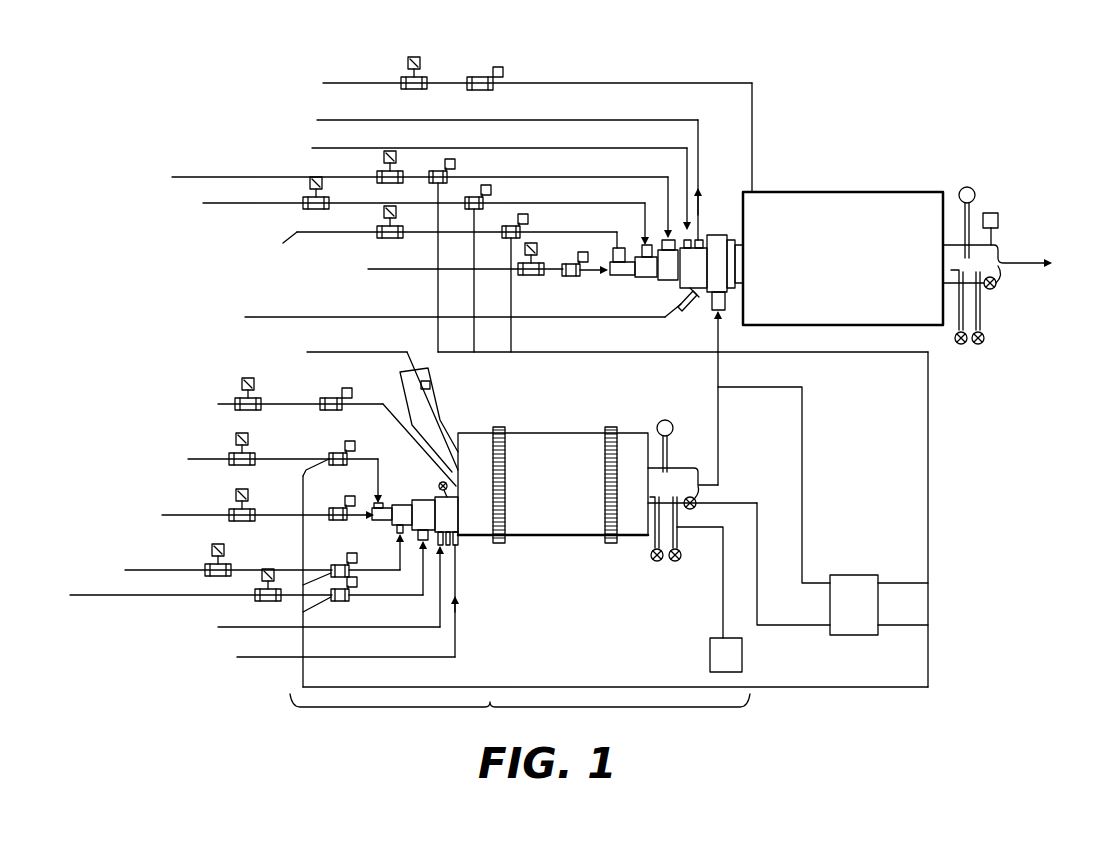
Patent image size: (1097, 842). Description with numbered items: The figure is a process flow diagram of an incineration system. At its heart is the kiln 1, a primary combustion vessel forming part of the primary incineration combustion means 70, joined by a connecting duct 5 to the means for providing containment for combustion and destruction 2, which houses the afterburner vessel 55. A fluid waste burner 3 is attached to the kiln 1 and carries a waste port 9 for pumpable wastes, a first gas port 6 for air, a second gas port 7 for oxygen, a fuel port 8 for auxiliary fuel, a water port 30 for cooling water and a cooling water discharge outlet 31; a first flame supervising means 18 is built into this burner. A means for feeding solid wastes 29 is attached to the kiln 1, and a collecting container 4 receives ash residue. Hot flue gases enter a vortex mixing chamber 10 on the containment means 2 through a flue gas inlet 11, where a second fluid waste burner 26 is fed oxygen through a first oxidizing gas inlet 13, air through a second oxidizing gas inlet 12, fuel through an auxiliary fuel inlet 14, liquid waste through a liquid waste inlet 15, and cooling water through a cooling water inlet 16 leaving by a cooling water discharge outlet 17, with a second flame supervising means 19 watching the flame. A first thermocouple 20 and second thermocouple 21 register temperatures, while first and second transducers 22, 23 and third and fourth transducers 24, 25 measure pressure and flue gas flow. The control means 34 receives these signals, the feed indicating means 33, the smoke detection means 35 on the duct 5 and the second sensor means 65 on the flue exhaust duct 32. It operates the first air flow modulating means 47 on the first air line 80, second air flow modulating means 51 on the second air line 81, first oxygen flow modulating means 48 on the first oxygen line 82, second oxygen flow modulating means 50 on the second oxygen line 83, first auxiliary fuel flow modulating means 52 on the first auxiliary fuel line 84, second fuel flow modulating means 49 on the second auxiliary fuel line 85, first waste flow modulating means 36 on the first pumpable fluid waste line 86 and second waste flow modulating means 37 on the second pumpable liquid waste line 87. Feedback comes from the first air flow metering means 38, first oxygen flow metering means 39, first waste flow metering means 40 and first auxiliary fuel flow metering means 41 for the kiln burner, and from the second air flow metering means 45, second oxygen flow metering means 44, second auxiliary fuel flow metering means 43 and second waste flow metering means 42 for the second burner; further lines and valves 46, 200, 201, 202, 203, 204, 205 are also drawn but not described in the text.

The kiln 1 is at (566, 440).
The means for providing containment for combustion and destruction 2 is at (868, 193).
The fluid waste burner 3 is at (420, 502).
The collecting container 4 is at (742, 662).
The connecting duct 5 is at (686, 470).
The first gas port 6 is at (420, 560).
The second gas port 7 is at (396, 530).
The fuel port 8 is at (380, 501).
The waste port 9 is at (372, 520).
The vortex mixing chamber 10 is at (714, 236).
The flue gas inlet 11 is at (710, 315).
The second oxidizing gas inlet 12 is at (664, 238).
The first oxidizing gas inlet 13 is at (642, 244).
The auxiliary fuel inlet 14 is at (612, 255).
The liquid waste inlet 15 is at (614, 275).
The cooling water inlet 16 is at (686, 236).
The cooling water discharge outlet 17 is at (700, 235).
The first flame supervising means 18 is at (439, 483).
The second flame supervising means 19 is at (694, 305).
The first thermocouple 20 is at (672, 444).
The second thermocouple 21 is at (968, 186).
The first transducer 22 is at (679, 562).
The second transducer 23 is at (654, 562).
The third transducer 24 is at (983, 345).
The fourth transducer 25 is at (958, 345).
The fluid waste burner 26 is at (694, 273).
The means for feeding solid wastes 29 is at (432, 410).
The water port 30 is at (446, 570).
The cooling water discharge outlet 31 is at (458, 544).
The flue exhaust duct 32 is at (1058, 252).
The feed indicating means 33 is at (430, 383).
The control means 34 is at (855, 575).
The smoke detection means 35 is at (996, 288).
The first waste flow modulating means 36 is at (338, 507).
The second waste flow modulating means 37 is at (572, 276).
The first air flow metering means 38 is at (260, 600).
The first oxygen flow metering means 39 is at (206, 576).
The first waste flow metering means 40 is at (232, 520).
The first auxiliary fuel flow metering means 41 is at (232, 465).
The second waste flow metering means 42 is at (520, 275).
The second auxiliary fuel flow metering means 43 is at (377, 236).
The second oxygen flow metering means 44 is at (328, 208).
The second air flow metering means 45 is at (377, 176).
The supply line 46 is at (462, 121).
The first air flow modulating means 47 is at (345, 601).
The first oxygen flow modulating means 48 is at (339, 564).
The second fuel flow modulating means 49 is at (509, 228).
The second oxygen flow modulating means 50 is at (472, 202).
The second air flow modulating means 51 is at (436, 176).
The first auxiliary fuel flow modulating means 52 is at (345, 452).
The afterburner vessel 55 is at (915, 320).
The second sensor means 65 is at (995, 213).
The primary incineration combustion means 70 is at (520, 716).
The first air line 80 is at (396, 595).
The second air line 81 is at (550, 177).
The first oxygen line 82 is at (285, 570).
The second oxygen line 83 is at (586, 203).
The first auxiliary fuel line 84 is at (298, 459).
The second auxiliary fuel line 85 is at (586, 232).
The first pumpable fluid waste line 86 is at (292, 515).
The second pumpable liquid waste line 87 is at (552, 266).
The control valve 200 is at (240, 386).
The supply line 201 is at (277, 404).
The shut-off valve 202 is at (350, 396).
The supply line 203 is at (368, 83).
The control valve 204 is at (418, 66).
The shut-off valve 205 is at (503, 68).